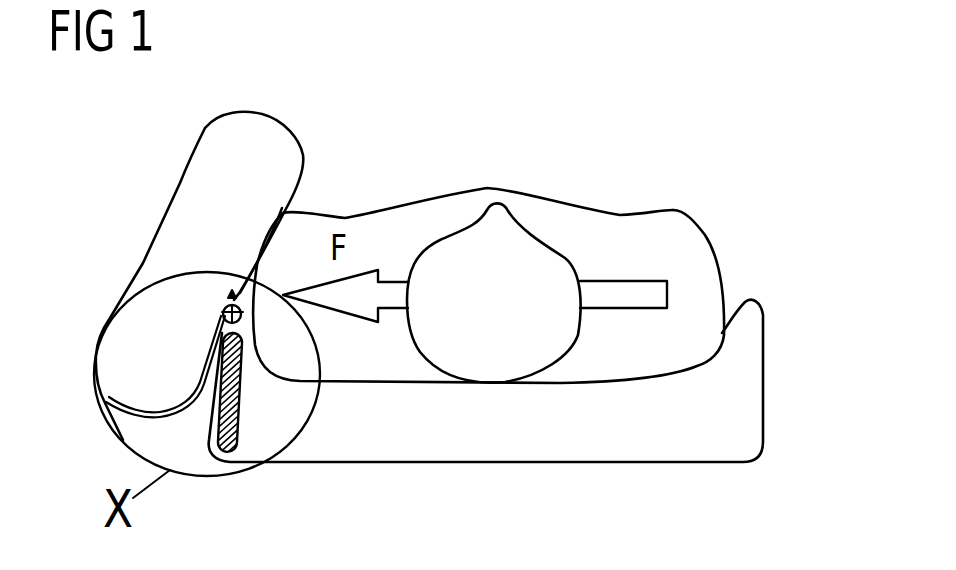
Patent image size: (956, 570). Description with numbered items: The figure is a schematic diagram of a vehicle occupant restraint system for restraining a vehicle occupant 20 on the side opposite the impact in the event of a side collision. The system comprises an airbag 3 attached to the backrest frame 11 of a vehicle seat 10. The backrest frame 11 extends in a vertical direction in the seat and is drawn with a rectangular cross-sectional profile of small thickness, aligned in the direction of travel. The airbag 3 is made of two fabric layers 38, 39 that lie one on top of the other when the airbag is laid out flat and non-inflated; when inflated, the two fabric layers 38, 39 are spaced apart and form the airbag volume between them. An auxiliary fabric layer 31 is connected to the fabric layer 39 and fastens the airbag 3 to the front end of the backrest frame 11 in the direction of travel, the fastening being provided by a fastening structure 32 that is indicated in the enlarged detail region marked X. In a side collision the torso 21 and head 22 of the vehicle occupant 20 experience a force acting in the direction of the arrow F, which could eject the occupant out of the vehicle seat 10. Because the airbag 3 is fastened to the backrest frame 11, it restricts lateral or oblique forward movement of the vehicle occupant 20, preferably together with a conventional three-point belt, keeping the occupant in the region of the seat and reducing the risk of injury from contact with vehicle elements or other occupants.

The airbag 3 is at (160, 226).
The vehicle seat 10 is at (630, 447).
The backrest frame 11 is at (243, 427).
The vehicle occupant 20 is at (690, 217).
The torso 21 is at (598, 225).
The head 22 is at (548, 348).
The auxiliary fabric layer 31 is at (147, 417).
The fastening structure 32 is at (233, 280).
The fabric layer 38 is at (183, 178).
The fabric layer 39 is at (282, 208).